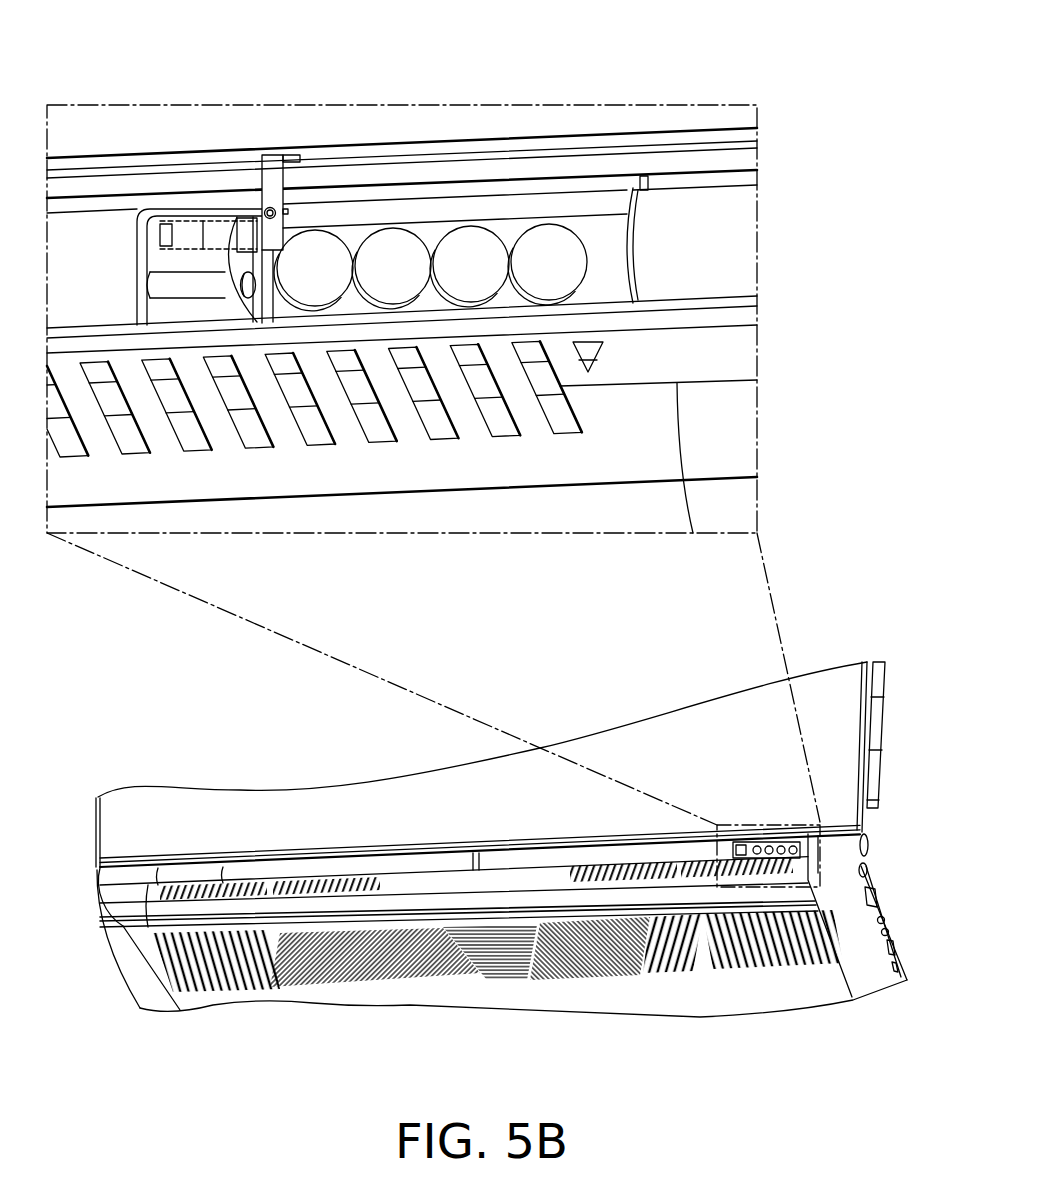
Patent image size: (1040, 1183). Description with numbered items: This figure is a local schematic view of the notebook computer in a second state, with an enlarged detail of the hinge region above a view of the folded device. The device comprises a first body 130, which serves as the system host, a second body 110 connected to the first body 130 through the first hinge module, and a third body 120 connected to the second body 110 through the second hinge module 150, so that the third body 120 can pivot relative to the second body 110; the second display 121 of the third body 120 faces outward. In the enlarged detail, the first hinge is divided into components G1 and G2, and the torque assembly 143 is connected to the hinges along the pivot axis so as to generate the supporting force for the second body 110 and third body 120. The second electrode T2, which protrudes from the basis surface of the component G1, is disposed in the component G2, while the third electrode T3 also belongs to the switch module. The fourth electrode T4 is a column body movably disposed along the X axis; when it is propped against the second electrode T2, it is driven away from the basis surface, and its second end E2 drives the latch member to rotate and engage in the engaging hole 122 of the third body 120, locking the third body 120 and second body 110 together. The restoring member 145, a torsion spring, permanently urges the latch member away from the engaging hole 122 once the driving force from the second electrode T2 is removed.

The second body 110 is at (868, 824).
The third body 120 is at (872, 807).
The second display 121 is at (826, 690).
The engaging hole 122 is at (335, 120).
The first body 130 is at (802, 997).
The torque assembly 143 is at (552, 240).
The restoring member 145 is at (290, 212).
The second hinge module 150 is at (879, 684).
The component of the first hinge G1 is at (707, 210).
The component of the first hinge G2 is at (65, 245).
The second end E2 is at (260, 247).
The second electrode T2 is at (127, 238).
The third electrode T3 is at (256, 300).
The fourth electrode T4 is at (222, 232).